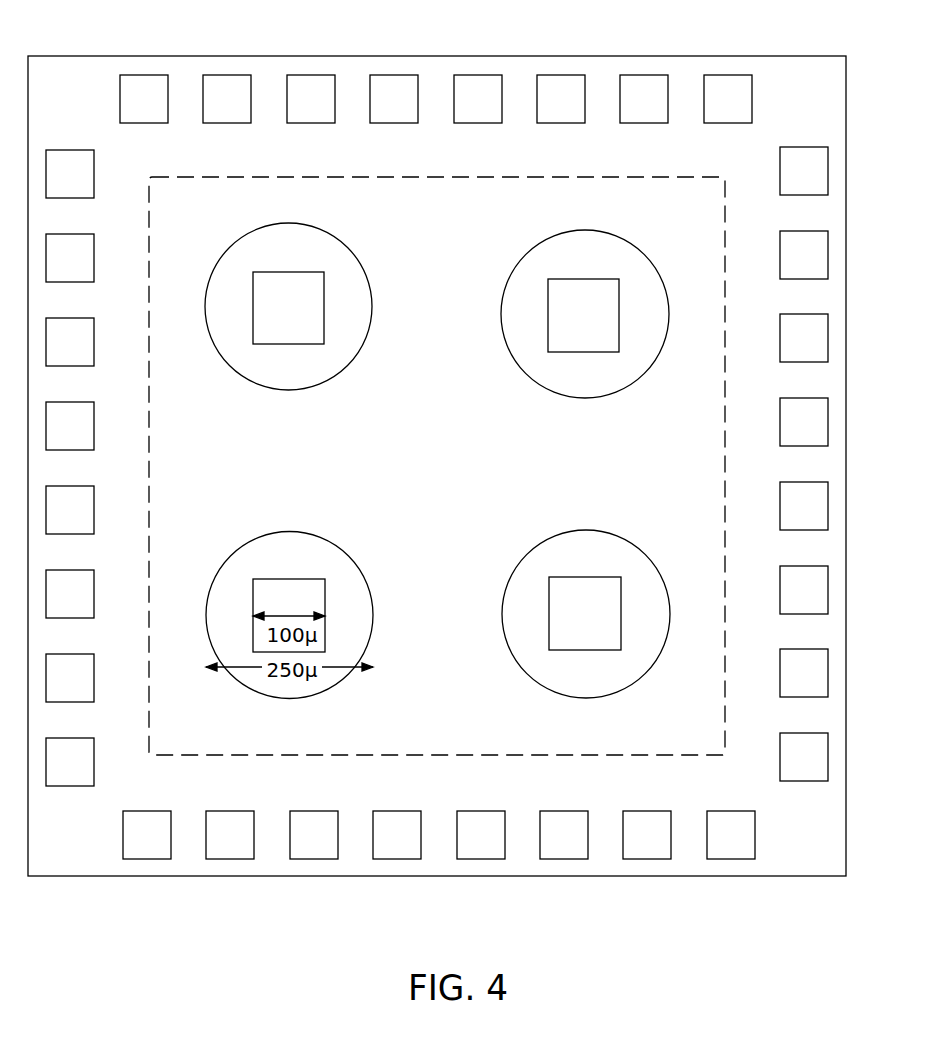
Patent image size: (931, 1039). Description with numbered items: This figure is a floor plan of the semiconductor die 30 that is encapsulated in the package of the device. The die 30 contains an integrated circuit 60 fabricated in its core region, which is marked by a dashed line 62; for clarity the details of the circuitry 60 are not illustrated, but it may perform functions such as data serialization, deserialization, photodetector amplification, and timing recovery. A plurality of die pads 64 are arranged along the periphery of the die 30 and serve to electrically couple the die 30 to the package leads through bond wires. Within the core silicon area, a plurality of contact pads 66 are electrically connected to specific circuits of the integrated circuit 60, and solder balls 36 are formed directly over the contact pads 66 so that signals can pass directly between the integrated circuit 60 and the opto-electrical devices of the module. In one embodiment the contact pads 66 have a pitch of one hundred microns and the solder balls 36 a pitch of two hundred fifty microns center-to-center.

The semiconductor die 30 is at (647, 55).
The die pads 64 is at (222, 85).
The dashed line 62 is at (725, 182).
The integrated circuit 60 is at (444, 465).
The solder balls 36 is at (315, 388).
The contact pads 66 is at (437, 462).